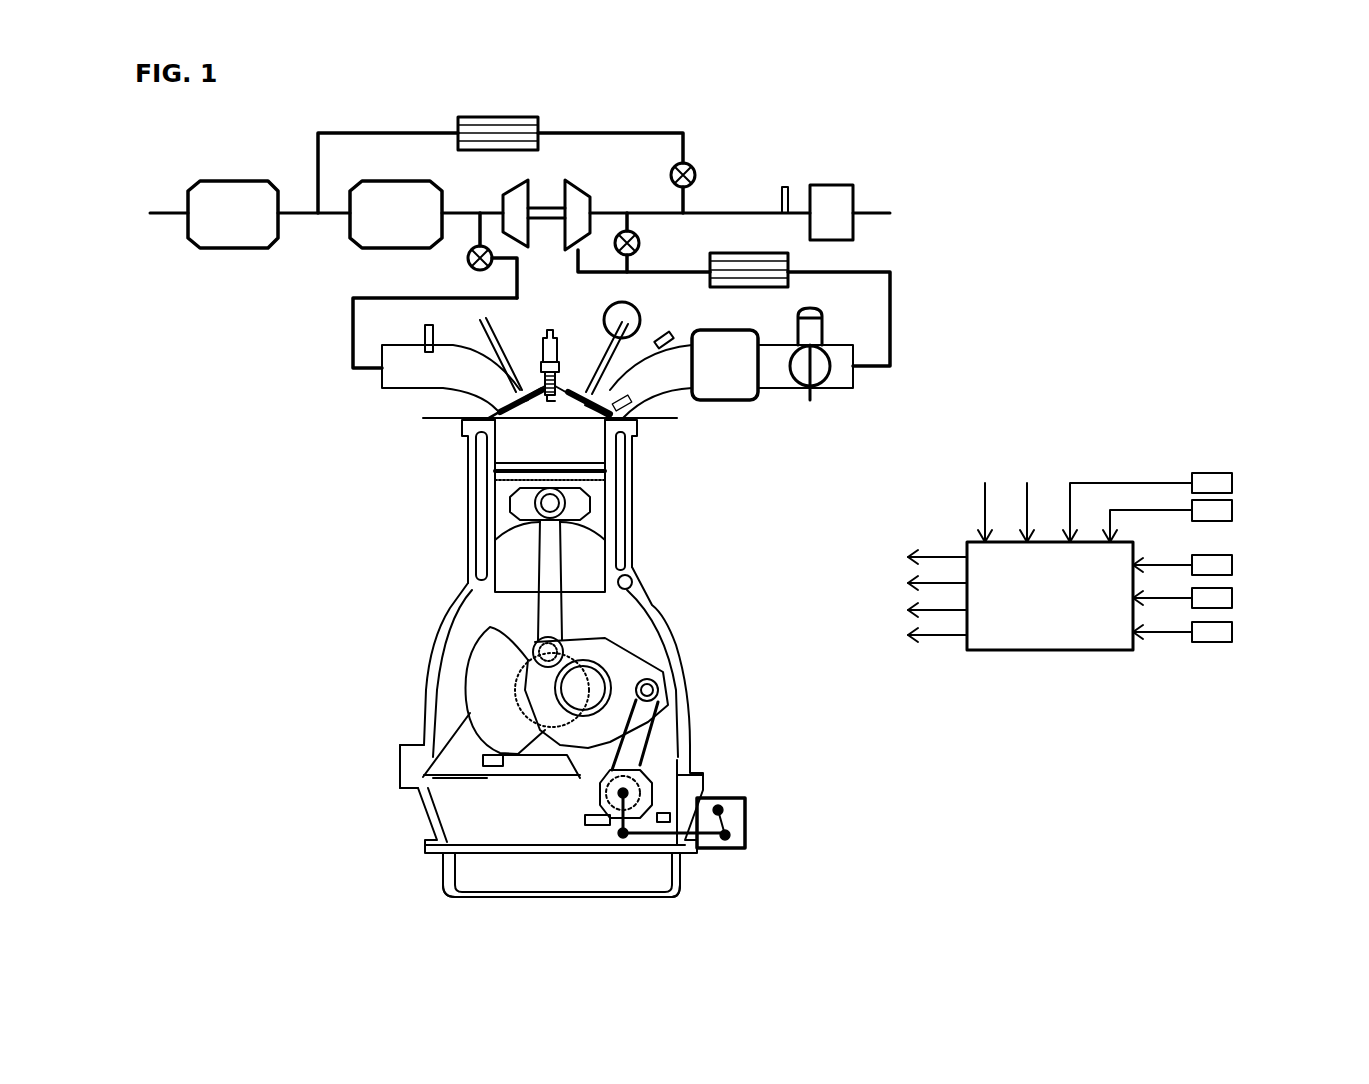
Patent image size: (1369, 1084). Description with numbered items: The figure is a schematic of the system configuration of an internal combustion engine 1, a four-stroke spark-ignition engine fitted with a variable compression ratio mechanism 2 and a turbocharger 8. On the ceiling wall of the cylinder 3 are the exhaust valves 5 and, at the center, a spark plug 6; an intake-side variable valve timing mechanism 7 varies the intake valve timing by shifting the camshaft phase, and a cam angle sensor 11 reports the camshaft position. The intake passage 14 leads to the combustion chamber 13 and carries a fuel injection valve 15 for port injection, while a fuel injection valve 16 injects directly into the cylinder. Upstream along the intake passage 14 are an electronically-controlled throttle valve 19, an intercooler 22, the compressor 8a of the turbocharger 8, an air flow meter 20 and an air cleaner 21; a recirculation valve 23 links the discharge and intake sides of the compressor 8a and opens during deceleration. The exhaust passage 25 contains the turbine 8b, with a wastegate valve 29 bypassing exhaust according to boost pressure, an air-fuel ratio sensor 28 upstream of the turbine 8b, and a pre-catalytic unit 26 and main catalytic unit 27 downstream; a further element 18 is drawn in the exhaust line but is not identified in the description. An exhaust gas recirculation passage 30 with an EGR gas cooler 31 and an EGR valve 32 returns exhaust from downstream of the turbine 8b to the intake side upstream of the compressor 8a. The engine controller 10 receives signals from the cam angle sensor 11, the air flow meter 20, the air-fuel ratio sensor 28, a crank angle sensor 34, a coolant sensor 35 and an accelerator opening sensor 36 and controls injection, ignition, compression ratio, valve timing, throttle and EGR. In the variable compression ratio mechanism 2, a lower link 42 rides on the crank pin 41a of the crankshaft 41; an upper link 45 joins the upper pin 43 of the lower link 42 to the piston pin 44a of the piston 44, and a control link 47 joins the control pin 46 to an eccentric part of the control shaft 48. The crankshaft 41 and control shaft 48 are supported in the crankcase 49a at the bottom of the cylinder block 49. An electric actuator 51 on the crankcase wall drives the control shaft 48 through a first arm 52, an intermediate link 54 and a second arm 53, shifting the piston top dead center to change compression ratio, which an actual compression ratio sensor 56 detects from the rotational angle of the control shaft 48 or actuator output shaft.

The internal combustion engine 1 is at (430, 562).
The variable compression ratio mechanism 2 is at (457, 655).
The cylinder 3 is at (468, 455).
The exhaust valve 5 is at (498, 400).
The spark plug 6 is at (545, 360).
The intake-side variable valve timing mechanism 7 is at (607, 315).
The turbocharger 8 is at (553, 195).
The compressor 8a is at (593, 205).
The turbine 8b is at (505, 205).
The engine controller 10 is at (1050, 608).
The cam angle sensor 11 is at (1232, 483).
The combustion chamber 13 is at (502, 420).
The intake passage 14 is at (890, 320).
The fuel injection valve for port injection 15 is at (665, 333).
The fuel injection valve for in-cylinder injection 16 is at (640, 418).
The catalyst 18 is at (738, 400).
The electronically-controlled throttle valve 19 is at (815, 385).
The air flow meter 20 is at (785, 187).
The air cleaner 21 is at (835, 190).
The intercooler 22 is at (790, 262).
The recirculation valve 23 is at (641, 243).
The exhaust passage 25 is at (353, 345).
The pre-catalytic unit 26 is at (358, 248).
The main catalytic unit 27 is at (207, 250).
The air-fuel ratio sensor 28 is at (425, 336).
The wastegate valve 29 is at (468, 258).
The exhaust gas recirculation passage 30 is at (390, 133).
The EGR gas cooler 31 is at (496, 117).
The EGR valve 32 is at (695, 165).
The crank angle sensor 34 is at (1232, 511).
The coolant sensor 35 is at (1232, 565).
The accelerator opening sensor 36 is at (1232, 598).
The crankshaft 41 is at (566, 661).
The crank pin 41a is at (597, 688).
The lower link 42 is at (612, 660).
The upper pin 43 is at (525, 655).
The piston 44 is at (502, 503).
The piston pin 44a is at (525, 518).
The upper link 45 is at (555, 540).
The control pin 46 is at (660, 690).
The control link 47 is at (640, 750).
The control shaft 48 is at (605, 790).
The cylinder block 49 is at (395, 763).
The crankcase 49a is at (480, 838).
The electric actuator 51 is at (773, 802).
The first arm 52 is at (730, 828).
The second arm 53 is at (590, 822).
The intermediate link 54 is at (657, 838).
The actual compression ratio sensor 56 is at (1232, 632).